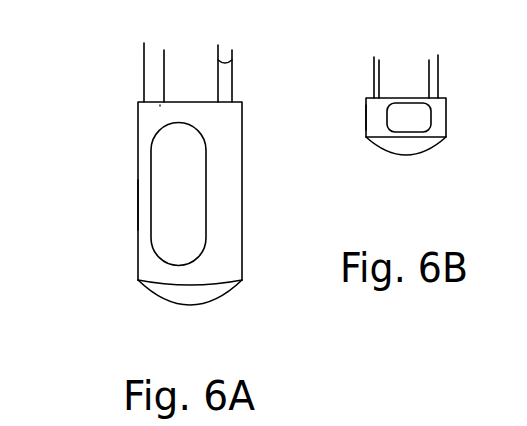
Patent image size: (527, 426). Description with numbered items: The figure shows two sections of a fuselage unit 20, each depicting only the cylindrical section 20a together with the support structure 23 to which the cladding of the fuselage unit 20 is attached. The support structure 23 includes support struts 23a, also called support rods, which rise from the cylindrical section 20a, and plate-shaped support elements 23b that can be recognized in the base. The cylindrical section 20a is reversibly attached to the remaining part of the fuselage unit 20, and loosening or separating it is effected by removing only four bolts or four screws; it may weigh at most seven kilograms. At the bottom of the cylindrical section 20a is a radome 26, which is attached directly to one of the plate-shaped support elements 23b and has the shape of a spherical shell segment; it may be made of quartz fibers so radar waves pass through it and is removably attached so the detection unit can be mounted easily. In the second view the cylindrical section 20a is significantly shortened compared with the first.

In FIG. 6A, the fuselage unit 20 is at (232, 198).
In FIG. 6B, the fuselage unit 20 is at (440, 110).
In FIG. 6A, the cylindrical section 20a is at (112, 207).
In FIG. 6B, the cylindrical section 20a is at (360, 130).
In FIG. 6A, the support structure 23 is at (134, 58).
In FIG. 6B, the support structure 23 is at (444, 66).
In FIG. 6A, the support struts 23a is at (224, 61).
In FIG. 6A, the plate-shaped support elements 23b is at (160, 105).
In FIG. 6A, the radome 26 is at (226, 291).
In FIG. 6B, the radome 26 is at (403, 150).